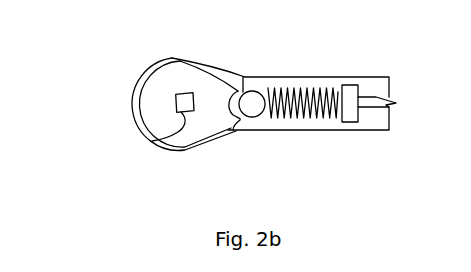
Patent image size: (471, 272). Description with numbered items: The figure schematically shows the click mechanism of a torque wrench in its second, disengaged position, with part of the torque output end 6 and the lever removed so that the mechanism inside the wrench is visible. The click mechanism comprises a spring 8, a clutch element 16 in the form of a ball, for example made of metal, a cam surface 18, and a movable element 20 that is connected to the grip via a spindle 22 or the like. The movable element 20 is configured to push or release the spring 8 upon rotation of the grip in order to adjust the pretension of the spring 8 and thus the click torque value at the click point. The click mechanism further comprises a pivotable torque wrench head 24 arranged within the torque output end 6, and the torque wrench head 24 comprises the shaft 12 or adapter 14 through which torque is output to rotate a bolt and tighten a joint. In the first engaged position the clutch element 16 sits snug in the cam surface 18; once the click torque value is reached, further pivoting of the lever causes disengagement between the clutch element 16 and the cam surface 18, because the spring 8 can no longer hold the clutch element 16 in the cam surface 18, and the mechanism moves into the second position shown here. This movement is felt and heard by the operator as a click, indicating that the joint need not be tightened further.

The torque output end 6 is at (138, 141).
The spring 8 is at (308, 82).
The shaft 12 is at (179, 125).
The adapter 14 is at (148, 143).
The clutch element 16 is at (254, 91).
The cam surface 18 is at (238, 113).
The movable element 20 is at (347, 85).
The spindle 22 is at (368, 97).
The torque wrench head 24 is at (178, 85).